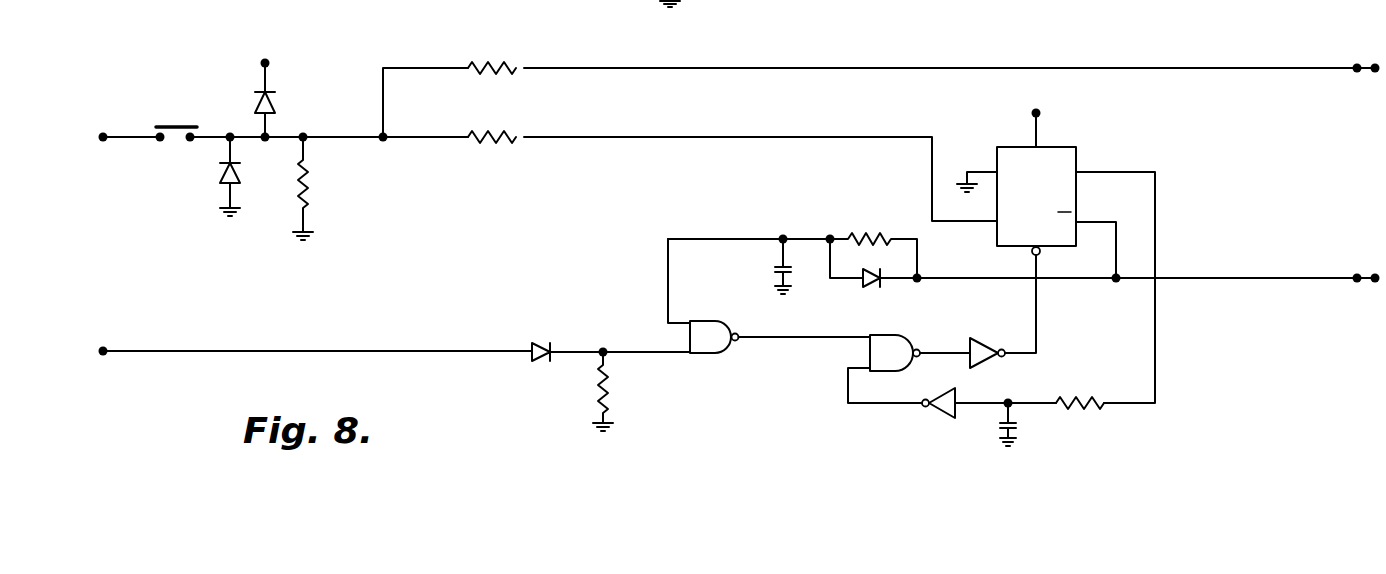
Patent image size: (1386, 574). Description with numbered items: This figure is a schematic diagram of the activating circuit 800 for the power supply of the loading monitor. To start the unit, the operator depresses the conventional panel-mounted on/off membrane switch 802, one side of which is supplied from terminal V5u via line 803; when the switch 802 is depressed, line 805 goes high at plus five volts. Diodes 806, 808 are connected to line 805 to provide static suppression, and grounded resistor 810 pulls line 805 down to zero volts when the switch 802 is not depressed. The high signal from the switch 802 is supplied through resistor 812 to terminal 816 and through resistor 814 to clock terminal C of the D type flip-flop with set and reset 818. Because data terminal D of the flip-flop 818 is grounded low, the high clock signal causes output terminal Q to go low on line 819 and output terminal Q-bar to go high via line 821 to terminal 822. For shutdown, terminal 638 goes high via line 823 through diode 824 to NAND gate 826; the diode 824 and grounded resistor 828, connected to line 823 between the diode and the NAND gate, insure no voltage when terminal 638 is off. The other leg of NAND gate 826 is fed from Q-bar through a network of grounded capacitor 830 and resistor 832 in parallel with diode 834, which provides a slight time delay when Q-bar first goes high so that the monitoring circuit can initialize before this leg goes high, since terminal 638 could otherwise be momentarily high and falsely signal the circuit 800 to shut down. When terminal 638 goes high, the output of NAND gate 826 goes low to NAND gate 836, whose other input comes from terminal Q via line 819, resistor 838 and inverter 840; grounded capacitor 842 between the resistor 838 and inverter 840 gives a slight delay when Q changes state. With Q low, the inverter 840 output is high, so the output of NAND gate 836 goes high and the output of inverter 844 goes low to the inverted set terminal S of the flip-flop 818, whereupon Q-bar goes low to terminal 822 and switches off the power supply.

The terminal 638 is at (105, 347).
The activating circuit 800 is at (556, 391).
The on/off membrane switch 802 is at (187, 113).
The line 803 is at (135, 139).
The line 805 is at (343, 136).
The diode 806 is at (271, 106).
The diode 808 is at (222, 175).
The grounded resistor 810 is at (306, 199).
The resistor 812 is at (499, 67).
The resistor 814 is at (516, 136).
The terminal 816 is at (1375, 67).
The D type flip-flop with set and reset 818 is at (1057, 147).
The line 819 is at (1155, 185).
The line 821 is at (1207, 276).
The terminal 822 is at (1377, 283).
The line 823 is at (330, 350).
The diode 824 is at (533, 340).
The NAND gate 826 is at (713, 354).
The grounded resistor 828 is at (608, 393).
The grounded capacitor 830 is at (777, 266).
The resistor 832 is at (848, 232).
The diode 834 is at (869, 285).
The NAND gate 836 is at (888, 335).
The resistor 838 is at (1072, 400).
The inverter 840 is at (958, 395).
The grounded capacitor 842 is at (995, 430).
The inverter 844 is at (997, 328).